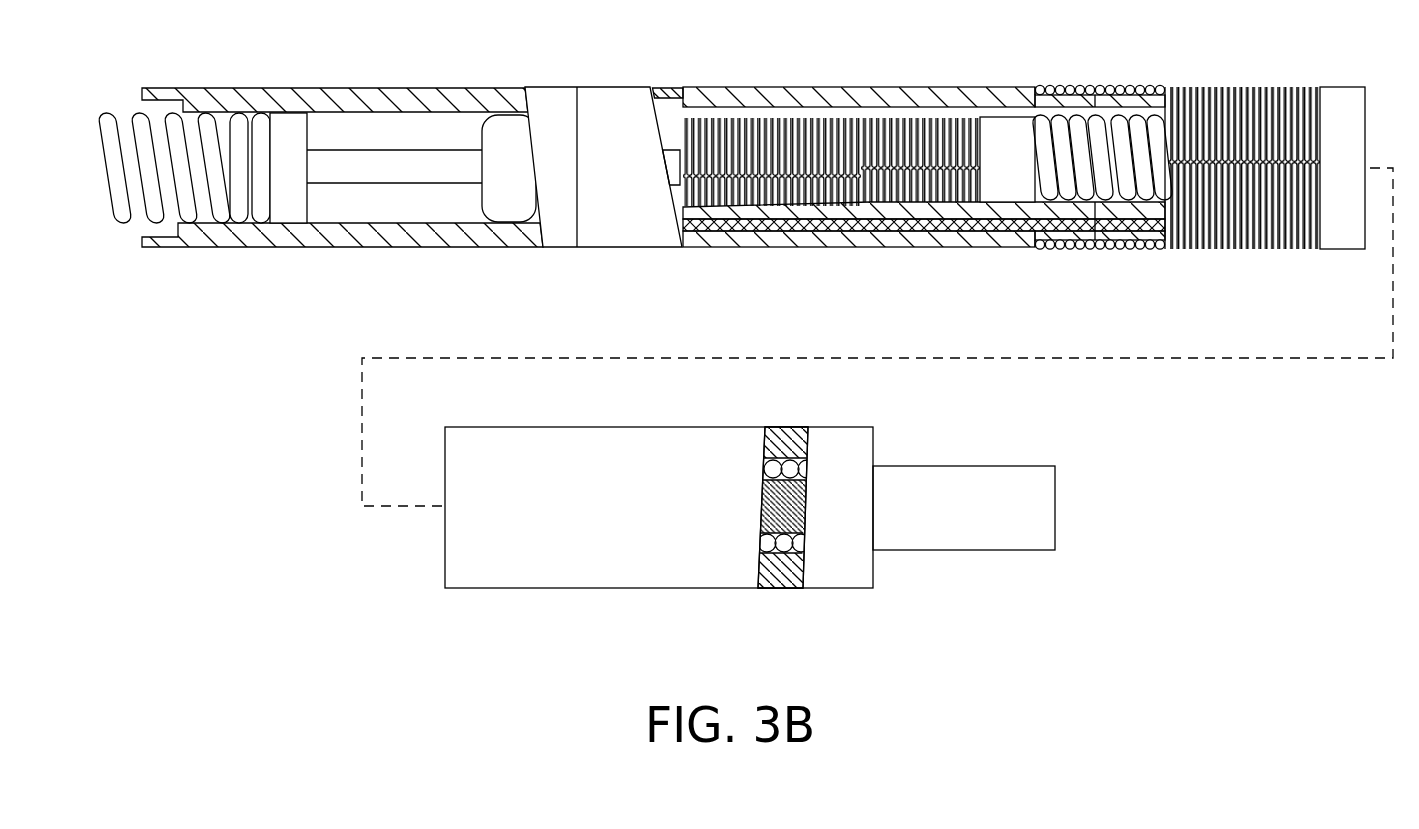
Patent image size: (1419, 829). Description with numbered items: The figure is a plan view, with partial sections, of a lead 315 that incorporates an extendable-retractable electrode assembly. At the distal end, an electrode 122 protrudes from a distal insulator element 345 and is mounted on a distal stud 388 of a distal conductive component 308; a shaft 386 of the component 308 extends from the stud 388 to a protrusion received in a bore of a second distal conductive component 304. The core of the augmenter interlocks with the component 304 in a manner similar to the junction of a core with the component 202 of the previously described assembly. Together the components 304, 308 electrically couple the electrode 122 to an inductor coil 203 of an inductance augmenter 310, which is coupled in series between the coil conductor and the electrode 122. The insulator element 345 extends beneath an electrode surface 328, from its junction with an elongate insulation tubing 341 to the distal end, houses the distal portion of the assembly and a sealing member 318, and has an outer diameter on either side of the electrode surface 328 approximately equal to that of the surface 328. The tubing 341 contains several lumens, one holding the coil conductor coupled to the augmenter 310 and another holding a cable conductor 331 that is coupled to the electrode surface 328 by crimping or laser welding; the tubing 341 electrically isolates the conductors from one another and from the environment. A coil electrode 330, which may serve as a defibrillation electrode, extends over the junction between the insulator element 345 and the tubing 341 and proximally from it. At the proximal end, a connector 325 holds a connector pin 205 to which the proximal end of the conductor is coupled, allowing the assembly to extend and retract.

The electrode 122 is at (113, 241).
The component 202 is at (1000, 105).
The inductor coil 203 is at (860, 117).
The connector pin 205 is at (895, 537).
The distal conductive component 304 is at (667, 114).
The distal conductive component 308 is at (367, 138).
The inductance augmenter 310 is at (773, 115).
The lead 315 is at (258, 534).
The sealing member 318 is at (508, 132).
The connector 325 is at (575, 612).
The electrode surface 328 is at (638, 190).
The coil electrode 330 is at (1170, 92).
The cable conductor 331 is at (888, 231).
The insulation tubing 341 is at (1332, 238).
The distal insulator element 345 is at (730, 237).
The shaft 386 is at (342, 165).
The distal stud 388 is at (223, 138).